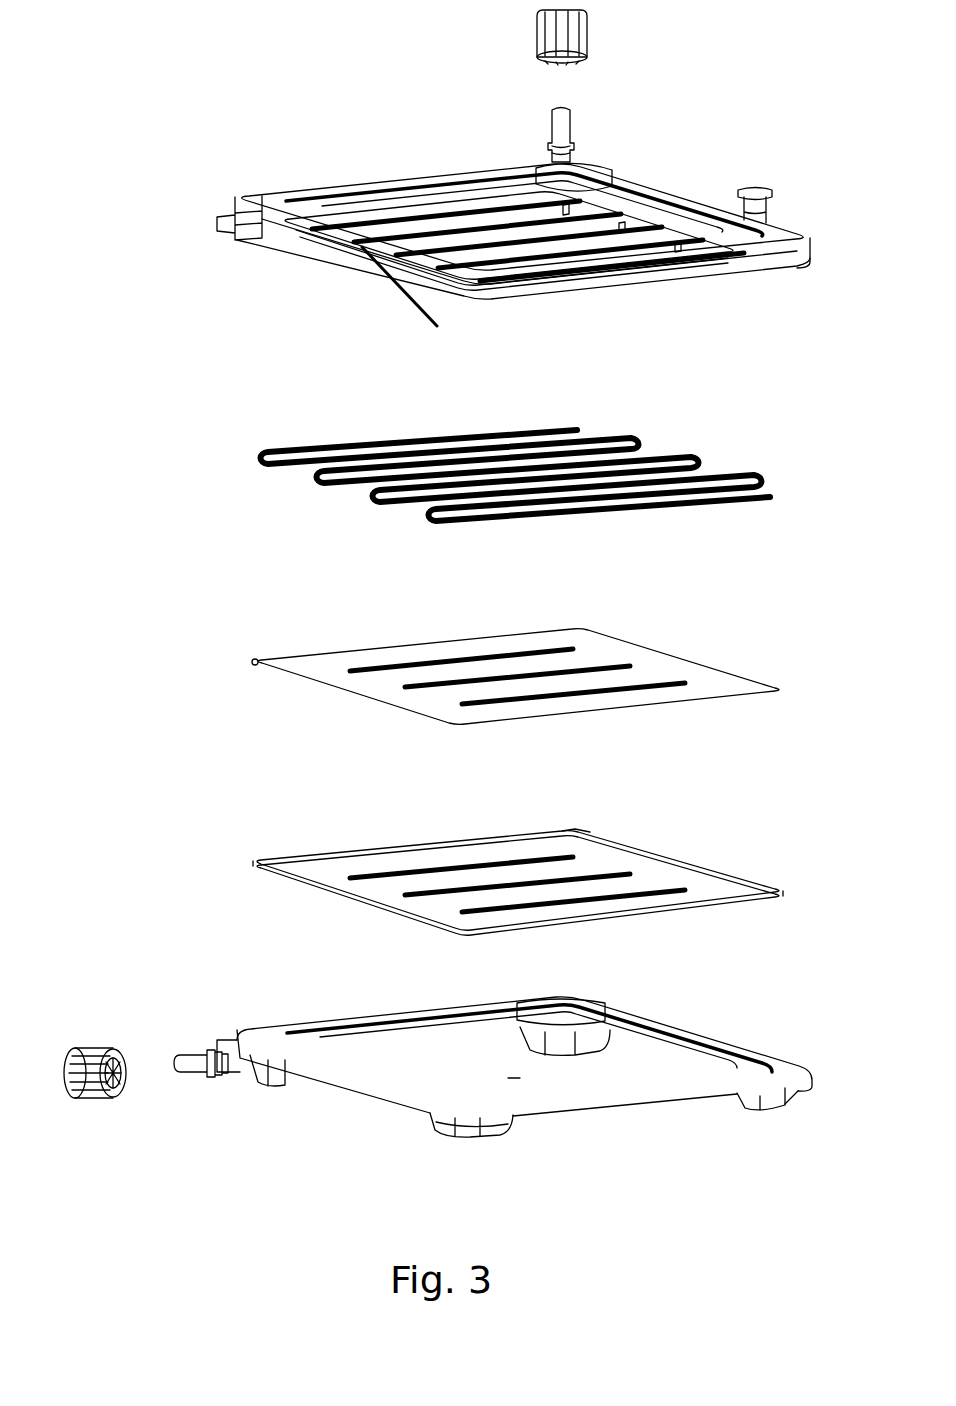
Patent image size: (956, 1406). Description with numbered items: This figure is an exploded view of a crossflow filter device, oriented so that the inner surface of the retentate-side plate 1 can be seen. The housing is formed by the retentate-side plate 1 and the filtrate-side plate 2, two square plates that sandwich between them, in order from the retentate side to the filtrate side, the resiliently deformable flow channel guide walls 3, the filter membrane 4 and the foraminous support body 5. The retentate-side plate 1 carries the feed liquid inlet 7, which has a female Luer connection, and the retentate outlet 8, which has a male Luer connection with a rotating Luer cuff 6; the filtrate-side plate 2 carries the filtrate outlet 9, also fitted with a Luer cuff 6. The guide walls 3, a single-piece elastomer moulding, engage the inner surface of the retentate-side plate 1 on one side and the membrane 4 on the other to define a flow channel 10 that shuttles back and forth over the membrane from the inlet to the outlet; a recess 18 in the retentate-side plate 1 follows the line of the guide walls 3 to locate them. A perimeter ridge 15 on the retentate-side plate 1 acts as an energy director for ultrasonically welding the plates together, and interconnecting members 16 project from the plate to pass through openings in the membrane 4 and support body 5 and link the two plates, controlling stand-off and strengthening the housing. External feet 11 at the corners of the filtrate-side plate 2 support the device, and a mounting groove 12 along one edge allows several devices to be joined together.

The retentate-side plate 1 is at (494, 258).
The filtrate-side plate 2 is at (482, 1077).
The flow channel guide walls 3 is at (267, 455).
The filter membrane 4 is at (255, 660).
The foraminous support body 5 is at (253, 862).
The rotating Luer cuff 6 is at (583, 55).
The inlet 7 is at (745, 192).
The outlet 8 is at (570, 128).
The outlet 9 is at (200, 1072).
The flow channel 10 is at (623, 230).
The external feet 11 is at (465, 1137).
The mounting groove 12 is at (358, 200).
The perimeter ridge 15 is at (328, 272).
The interconnecting members 16 is at (470, 275).
The recess 18 is at (437, 326).